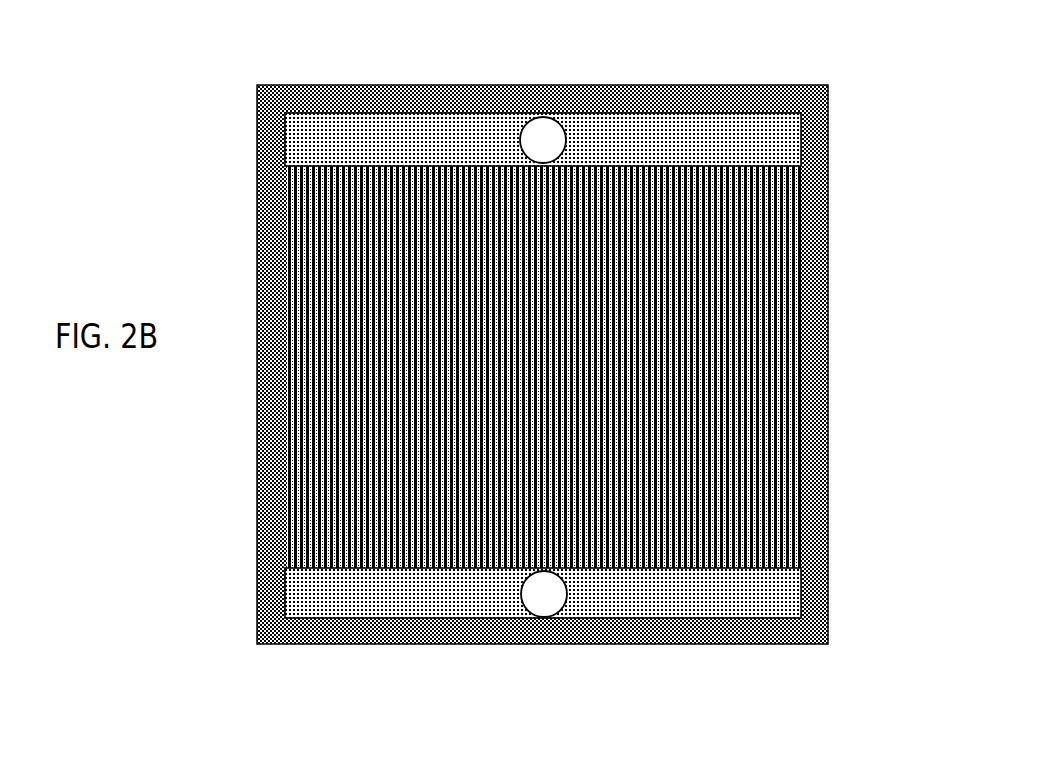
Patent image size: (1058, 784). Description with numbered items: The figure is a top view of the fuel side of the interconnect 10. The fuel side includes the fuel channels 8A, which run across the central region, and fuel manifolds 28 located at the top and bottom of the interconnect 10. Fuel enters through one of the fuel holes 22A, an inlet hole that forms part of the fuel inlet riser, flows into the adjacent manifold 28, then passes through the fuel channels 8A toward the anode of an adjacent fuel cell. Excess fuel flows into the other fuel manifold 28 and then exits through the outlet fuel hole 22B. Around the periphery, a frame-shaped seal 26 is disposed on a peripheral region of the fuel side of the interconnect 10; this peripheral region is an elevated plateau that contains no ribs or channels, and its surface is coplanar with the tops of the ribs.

The interconnect 10 is at (216, 213).
The frame-shaped seal 26 is at (828, 477).
The fuel manifold 28 is at (803, 138).
The fuel channels 8A is at (747, 367).
The fuel inlet hole 22A is at (542, 116).
The fuel outlet hole 22B is at (543, 618).